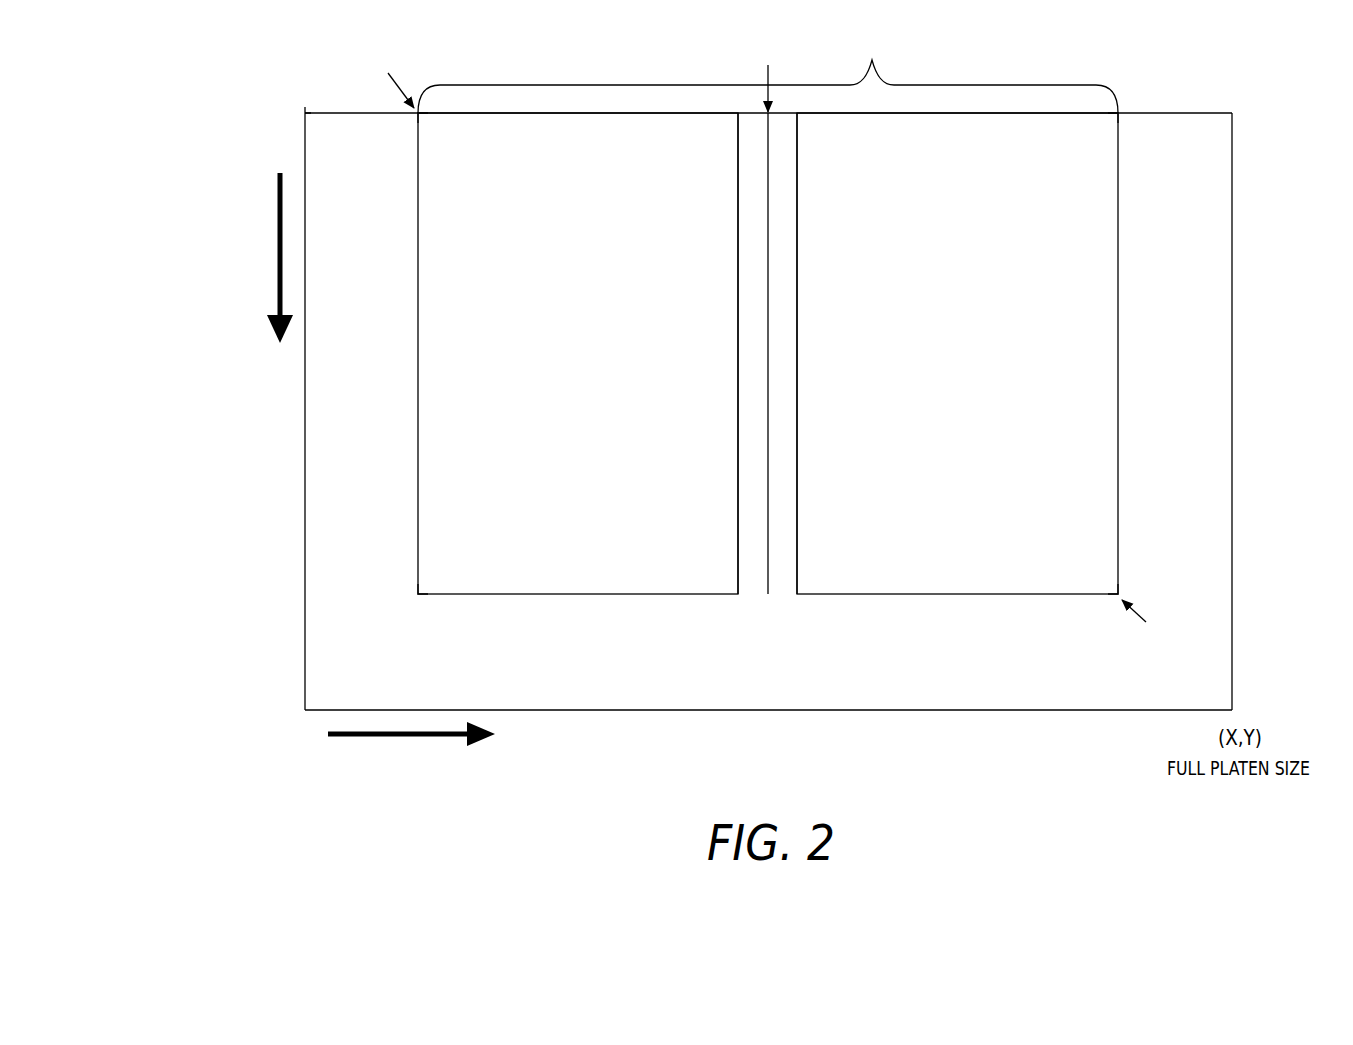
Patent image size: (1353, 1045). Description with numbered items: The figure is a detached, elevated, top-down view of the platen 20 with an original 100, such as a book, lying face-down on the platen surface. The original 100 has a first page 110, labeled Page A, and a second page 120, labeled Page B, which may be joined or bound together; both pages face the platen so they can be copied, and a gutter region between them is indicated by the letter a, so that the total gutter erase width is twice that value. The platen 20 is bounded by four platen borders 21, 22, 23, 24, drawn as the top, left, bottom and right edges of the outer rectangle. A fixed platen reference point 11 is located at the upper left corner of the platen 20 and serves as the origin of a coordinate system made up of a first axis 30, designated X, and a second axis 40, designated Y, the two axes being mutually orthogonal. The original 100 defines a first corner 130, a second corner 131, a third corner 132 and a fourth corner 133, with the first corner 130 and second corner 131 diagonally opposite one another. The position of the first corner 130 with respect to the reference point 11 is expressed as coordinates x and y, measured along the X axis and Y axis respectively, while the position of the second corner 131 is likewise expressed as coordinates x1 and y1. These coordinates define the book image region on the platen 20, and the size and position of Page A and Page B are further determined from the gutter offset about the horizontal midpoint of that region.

The fixed platen reference point 11 is at (303, 110).
The platen 20 is at (740, 436).
The platen border 21 is at (960, 112).
The platen border 22 is at (305, 401).
The platen border 23 is at (790, 710).
The platen border 24 is at (1233, 403).
The first axis 30 is at (407, 768).
The second axis 40 is at (253, 250).
The original 100 is at (777, 357).
The first page 110 is at (957, 578).
The second page 120 is at (582, 576).
The first corner 130 is at (418, 113).
The second corner 131 is at (1118, 594).
The third corner 132 is at (1118, 113).
The fourth corner 133 is at (418, 594).